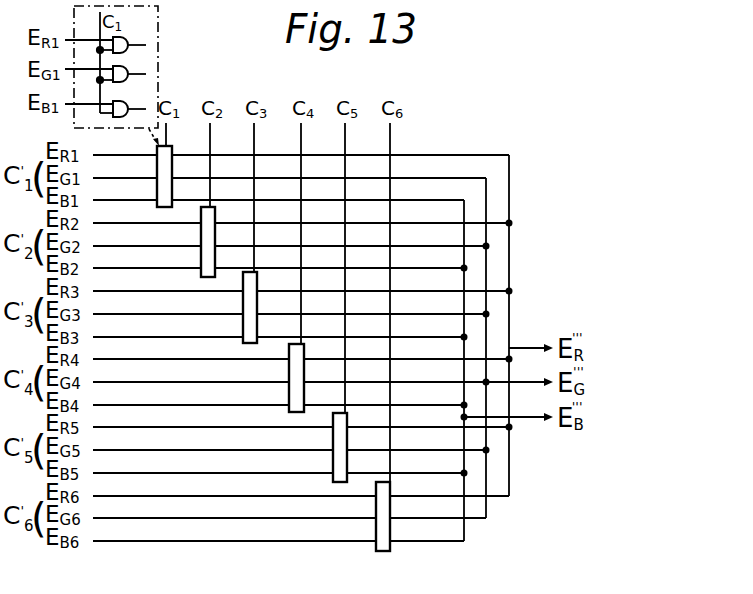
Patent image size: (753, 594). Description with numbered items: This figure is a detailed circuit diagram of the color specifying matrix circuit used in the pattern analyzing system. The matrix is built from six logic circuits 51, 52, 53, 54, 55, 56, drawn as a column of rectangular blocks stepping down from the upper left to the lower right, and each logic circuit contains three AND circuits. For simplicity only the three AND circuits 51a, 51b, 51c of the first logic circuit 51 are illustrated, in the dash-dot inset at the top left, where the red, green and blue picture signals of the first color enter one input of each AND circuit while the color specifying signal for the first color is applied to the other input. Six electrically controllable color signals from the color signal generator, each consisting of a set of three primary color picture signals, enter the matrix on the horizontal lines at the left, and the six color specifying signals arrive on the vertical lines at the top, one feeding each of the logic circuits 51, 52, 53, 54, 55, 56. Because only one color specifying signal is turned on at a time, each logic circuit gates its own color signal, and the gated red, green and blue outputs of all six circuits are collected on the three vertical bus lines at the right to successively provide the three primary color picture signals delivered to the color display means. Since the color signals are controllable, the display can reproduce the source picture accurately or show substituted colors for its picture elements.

The logic circuit 51 is at (172, 147).
The AND circuit 51a is at (138, 31).
The AND circuit 51b is at (139, 65).
The AND circuit 51c is at (138, 99).
The logic circuit 52 is at (215, 210).
The logic circuit 53 is at (257, 275).
The logic circuit 54 is at (304, 347).
The logic circuit 55 is at (347, 416).
The logic circuit 56 is at (390, 485).